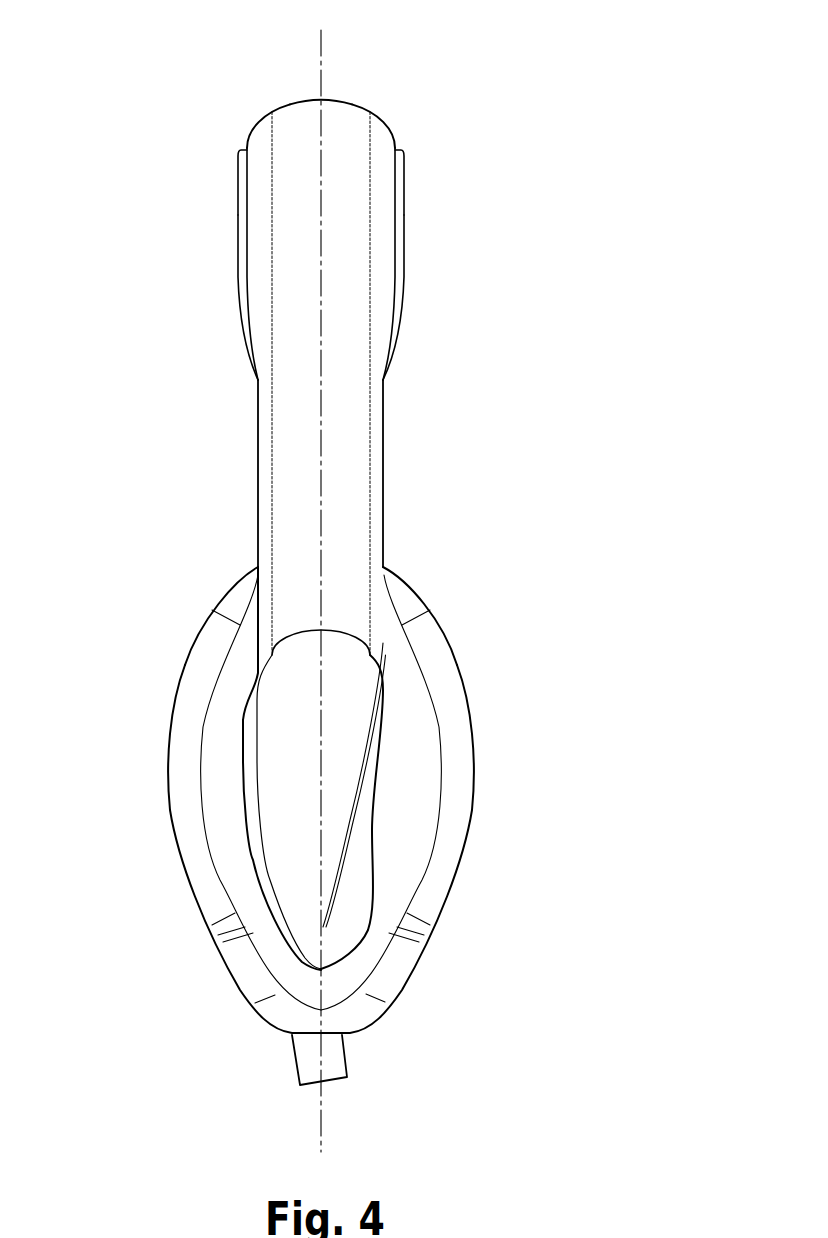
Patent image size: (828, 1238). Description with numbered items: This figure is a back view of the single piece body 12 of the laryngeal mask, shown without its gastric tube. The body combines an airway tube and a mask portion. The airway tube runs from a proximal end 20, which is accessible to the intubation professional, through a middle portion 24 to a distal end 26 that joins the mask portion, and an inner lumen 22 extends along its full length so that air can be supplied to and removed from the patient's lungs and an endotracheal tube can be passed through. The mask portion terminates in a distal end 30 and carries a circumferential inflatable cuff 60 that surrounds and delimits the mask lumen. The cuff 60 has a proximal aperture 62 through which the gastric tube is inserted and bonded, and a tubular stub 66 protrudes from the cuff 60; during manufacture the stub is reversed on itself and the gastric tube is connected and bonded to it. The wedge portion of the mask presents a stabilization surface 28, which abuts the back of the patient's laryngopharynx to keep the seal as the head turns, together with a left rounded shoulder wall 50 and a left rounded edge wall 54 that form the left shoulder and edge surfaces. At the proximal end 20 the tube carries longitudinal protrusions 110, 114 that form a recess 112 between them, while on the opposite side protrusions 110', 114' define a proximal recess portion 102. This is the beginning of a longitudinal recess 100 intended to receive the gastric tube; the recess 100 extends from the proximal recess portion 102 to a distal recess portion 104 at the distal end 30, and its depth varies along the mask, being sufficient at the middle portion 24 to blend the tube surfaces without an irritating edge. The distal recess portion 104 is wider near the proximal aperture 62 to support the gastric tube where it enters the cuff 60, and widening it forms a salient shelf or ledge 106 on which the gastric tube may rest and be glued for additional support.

The single piece body 12 is at (350, 591).
The proximal end 20 is at (347, 143).
The inner lumen 22 is at (350, 107).
The middle portion 24 is at (350, 402).
The distal end 26 is at (345, 572).
The stabilization surface 28 is at (280, 748).
The distal end 30 is at (296, 934).
The left rounded shoulder wall 50 is at (260, 672).
The left rounded edge wall 54 is at (254, 792).
The inflatable cuff 60 is at (467, 703).
The proximal aperture 62 is at (325, 928).
The tubular stub 66 is at (333, 1060).
The longitudinal recess 100 is at (367, 802).
The proximal recess portion 102 is at (396, 229).
The distal recess portion 104 is at (370, 764).
The salient shelf or ledge 106 is at (360, 876).
The longitudinal protrusion 110 is at (215, 182).
The longitudinal protrusion 110' is at (430, 182).
The recess 112 is at (247, 229).
The longitudinal protrusion 114 is at (213, 297).
The longitudinal protrusion 114' is at (431, 297).